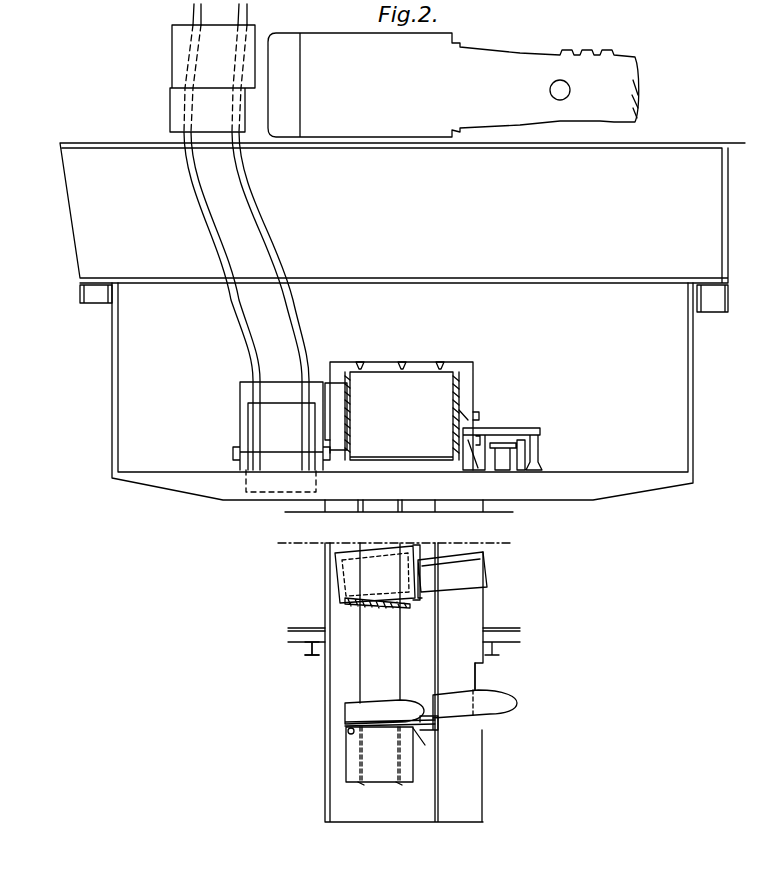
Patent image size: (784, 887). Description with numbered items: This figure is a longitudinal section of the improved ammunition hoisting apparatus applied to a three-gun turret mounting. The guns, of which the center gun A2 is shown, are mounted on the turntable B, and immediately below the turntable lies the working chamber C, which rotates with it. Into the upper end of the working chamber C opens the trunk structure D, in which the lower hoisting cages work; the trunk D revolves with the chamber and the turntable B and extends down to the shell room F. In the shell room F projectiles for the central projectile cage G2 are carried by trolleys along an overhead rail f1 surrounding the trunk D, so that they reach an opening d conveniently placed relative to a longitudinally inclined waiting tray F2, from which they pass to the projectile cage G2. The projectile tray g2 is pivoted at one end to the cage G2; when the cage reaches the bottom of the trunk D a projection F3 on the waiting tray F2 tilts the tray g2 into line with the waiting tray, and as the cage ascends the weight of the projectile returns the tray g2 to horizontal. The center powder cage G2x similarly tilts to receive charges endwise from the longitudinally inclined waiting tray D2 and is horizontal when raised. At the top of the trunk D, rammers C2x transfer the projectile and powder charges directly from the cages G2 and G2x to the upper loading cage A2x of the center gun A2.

The center gun A2 is at (404, 237).
The upper loading cage for the center gun A2x is at (281, 437).
The turntable B is at (402, 227).
The working chamber C is at (402, 397).
The rammers C2x is at (503, 448).
The trunk structure D is at (399, 579).
The longitudinally inclined waiting tray D2 is at (452, 575).
The center powder cage G2x is at (412, 594).
The central projectile cage G2 is at (379, 756).
The projectile tray g2 is at (425, 745).
The shell room F is at (400, 680).
The longitudinally inclined waiting tray F2 is at (487, 716).
The projection F3 is at (438, 728).
The overhead rail f1 is at (308, 661).
The opening d is at (478, 688).